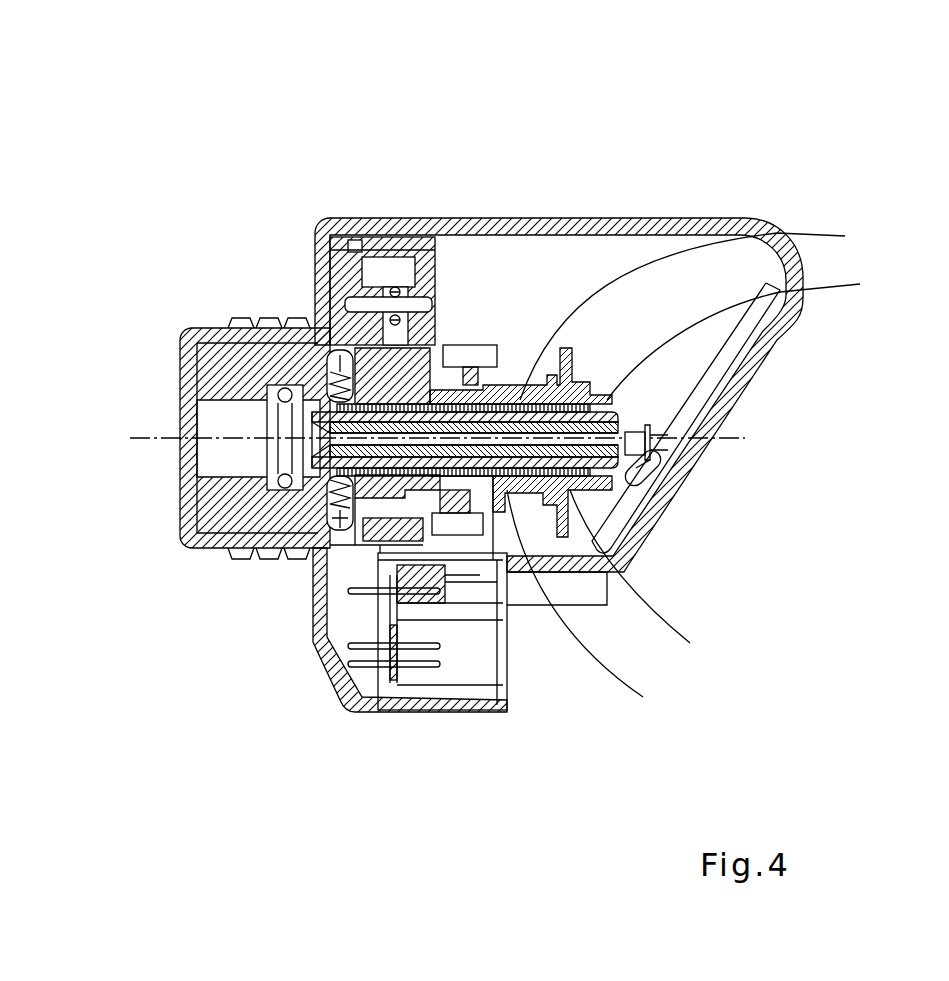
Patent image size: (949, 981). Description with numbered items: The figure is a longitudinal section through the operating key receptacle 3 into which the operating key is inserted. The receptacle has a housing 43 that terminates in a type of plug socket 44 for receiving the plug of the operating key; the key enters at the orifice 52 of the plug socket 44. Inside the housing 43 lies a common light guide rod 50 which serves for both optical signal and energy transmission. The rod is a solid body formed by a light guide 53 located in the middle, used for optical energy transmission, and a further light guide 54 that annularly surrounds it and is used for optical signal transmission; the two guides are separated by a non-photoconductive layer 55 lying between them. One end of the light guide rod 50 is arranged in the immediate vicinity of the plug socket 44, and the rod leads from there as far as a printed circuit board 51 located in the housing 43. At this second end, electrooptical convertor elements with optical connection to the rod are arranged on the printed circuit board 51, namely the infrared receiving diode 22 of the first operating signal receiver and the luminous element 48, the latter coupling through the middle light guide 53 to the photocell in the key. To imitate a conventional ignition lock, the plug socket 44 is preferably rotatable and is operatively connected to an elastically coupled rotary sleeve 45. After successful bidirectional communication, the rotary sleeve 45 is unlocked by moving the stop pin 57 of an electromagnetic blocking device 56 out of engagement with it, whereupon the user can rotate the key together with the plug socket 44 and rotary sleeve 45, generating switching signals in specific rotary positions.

The operating key receptacle 3 is at (318, 180).
The infrared receiving diode 22 is at (660, 468).
The housing 43 is at (443, 222).
The plug socket 44 is at (220, 377).
The rotary sleeve 45 is at (322, 318).
The luminous element 48 is at (670, 442).
The light guide rod 50 is at (622, 414).
The printed circuit board 51 is at (653, 425).
The orifice 52 is at (215, 443).
The light guide 53 is at (653, 527).
The further light guide 54 is at (737, 472).
The non-photoconductive layer 55 is at (700, 475).
The electromagnetic blocking device 56 is at (398, 240).
The stop pin 57 is at (318, 237).